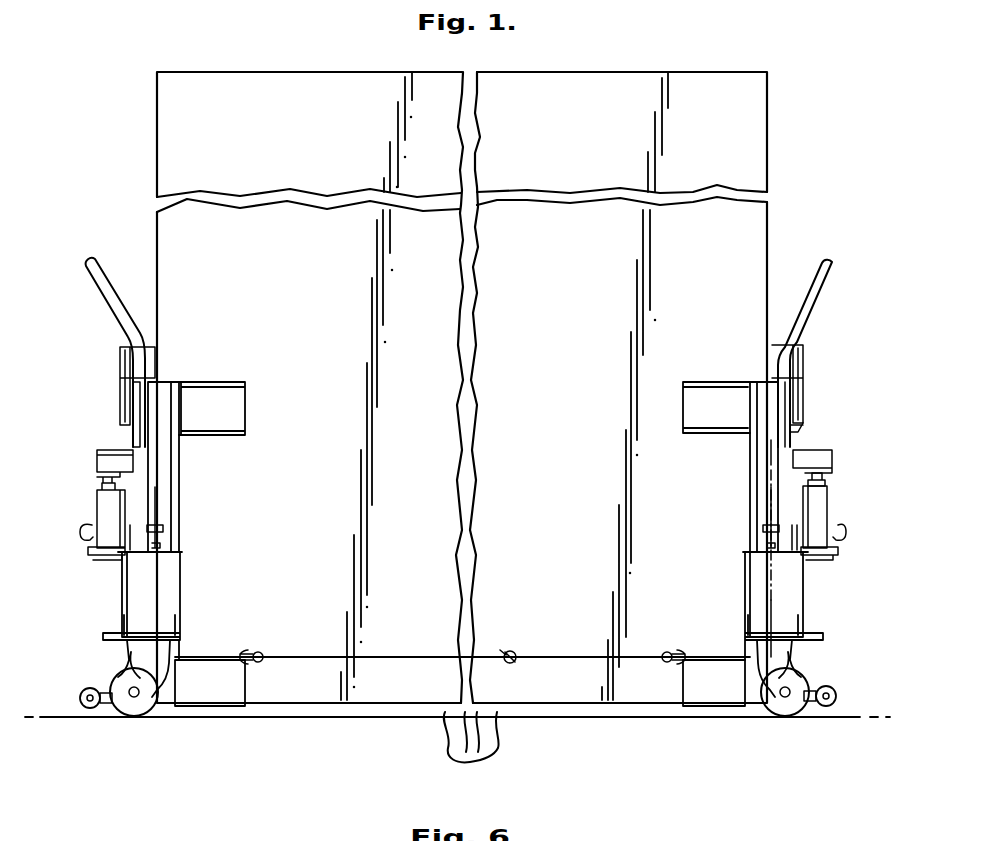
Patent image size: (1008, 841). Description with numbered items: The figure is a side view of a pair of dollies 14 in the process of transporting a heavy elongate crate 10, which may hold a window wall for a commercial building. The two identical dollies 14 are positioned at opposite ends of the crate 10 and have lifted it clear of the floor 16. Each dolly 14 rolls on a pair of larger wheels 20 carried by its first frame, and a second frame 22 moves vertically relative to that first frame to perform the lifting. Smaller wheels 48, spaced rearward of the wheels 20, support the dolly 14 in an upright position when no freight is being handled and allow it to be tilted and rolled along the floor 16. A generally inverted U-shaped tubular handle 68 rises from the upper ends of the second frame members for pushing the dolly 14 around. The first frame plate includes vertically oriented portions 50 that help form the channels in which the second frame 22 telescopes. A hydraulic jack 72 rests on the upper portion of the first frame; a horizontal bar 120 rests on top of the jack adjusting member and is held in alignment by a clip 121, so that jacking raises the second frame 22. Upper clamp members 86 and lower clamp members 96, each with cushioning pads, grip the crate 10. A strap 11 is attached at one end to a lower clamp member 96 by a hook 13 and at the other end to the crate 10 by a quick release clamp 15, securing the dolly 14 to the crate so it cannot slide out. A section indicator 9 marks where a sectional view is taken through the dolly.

The section line 9- 9 is at (778, 452).
The crate 10 is at (712, 76).
The strap 11 is at (402, 656).
The hook 13 is at (260, 650).
The dolly 14 is at (487, 459).
The quick release clamp 15 is at (510, 652).
The floor 16 is at (480, 735).
The wheels 20 is at (135, 714).
The second frame 22 is at (799, 433).
The wheels 48 is at (832, 692).
The vertically oriented portions 50 is at (803, 579).
The tubular handle 68 is at (833, 266).
The hydraulic jack 72 is at (828, 500).
The clamp members 86 is at (240, 408).
The clamp members 96 is at (197, 702).
The horizontal bar 120 is at (806, 452).
The clip 121 is at (832, 461).